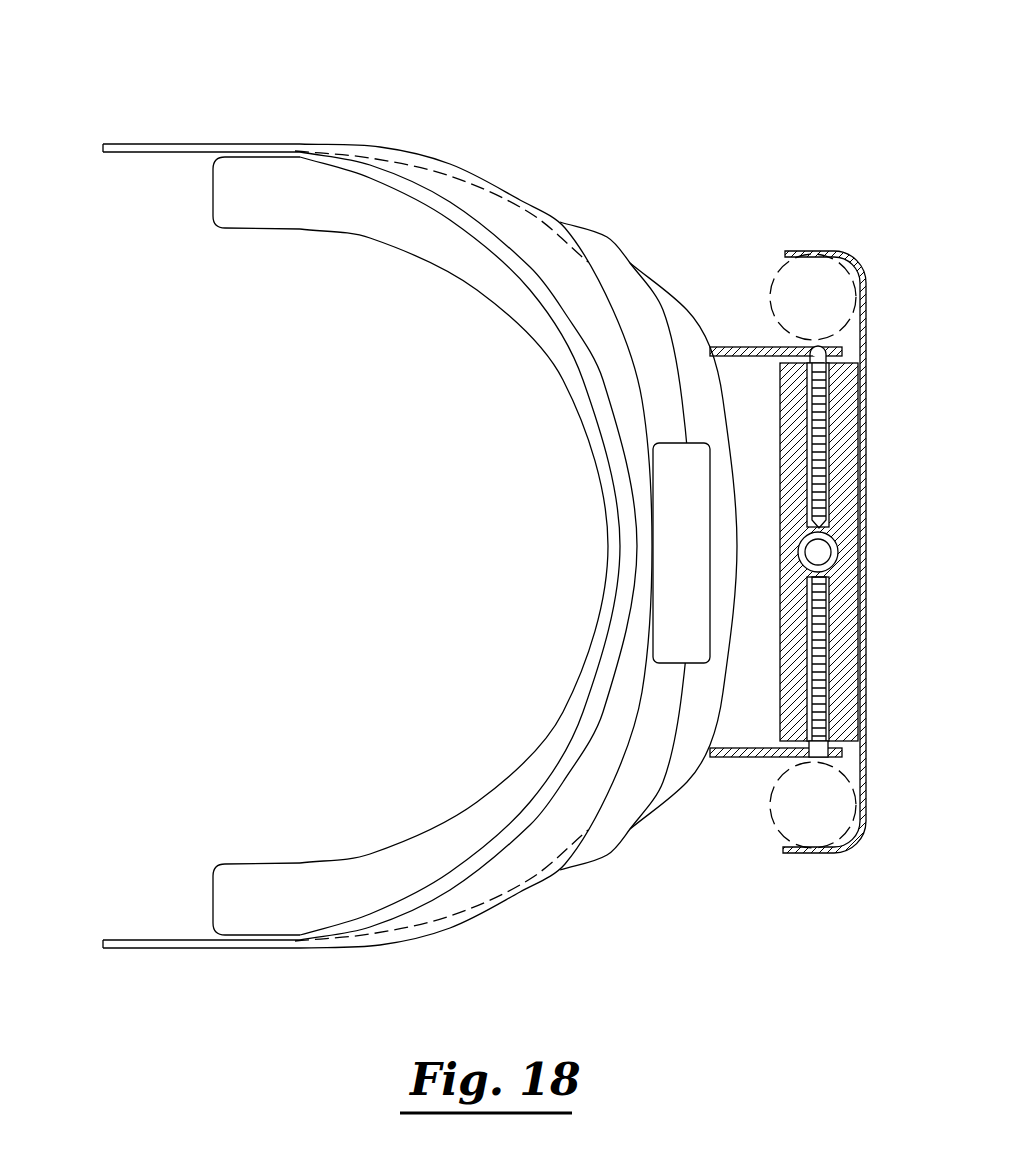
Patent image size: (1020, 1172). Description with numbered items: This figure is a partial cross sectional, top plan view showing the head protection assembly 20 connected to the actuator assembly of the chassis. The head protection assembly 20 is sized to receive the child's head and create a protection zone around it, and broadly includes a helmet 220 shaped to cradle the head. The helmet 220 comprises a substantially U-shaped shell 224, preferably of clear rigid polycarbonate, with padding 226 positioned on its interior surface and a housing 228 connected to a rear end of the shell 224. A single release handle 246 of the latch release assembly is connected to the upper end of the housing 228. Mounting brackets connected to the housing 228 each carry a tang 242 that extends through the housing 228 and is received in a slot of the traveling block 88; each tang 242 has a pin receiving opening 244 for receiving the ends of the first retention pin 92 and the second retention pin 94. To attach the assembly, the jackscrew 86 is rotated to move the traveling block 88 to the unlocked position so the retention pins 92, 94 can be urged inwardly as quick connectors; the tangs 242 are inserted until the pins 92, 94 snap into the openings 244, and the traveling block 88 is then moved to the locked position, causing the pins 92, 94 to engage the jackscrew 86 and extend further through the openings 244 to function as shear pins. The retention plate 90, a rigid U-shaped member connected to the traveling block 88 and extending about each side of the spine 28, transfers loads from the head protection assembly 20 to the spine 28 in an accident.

The head protection assembly 20 is at (350, 543).
The helmet 220 is at (293, 143).
The shell 224 is at (148, 948).
The padding 226 is at (280, 860).
The housing 228 is at (600, 238).
The tang 242 is at (743, 346).
The pin receiving opening 244 is at (812, 347).
The first retention pin 92 is at (843, 392).
The retention plate 90 is at (868, 446).
The jackscrew 86 is at (836, 541).
The traveling block 88 is at (778, 545).
The second retention pin 94 is at (848, 681).
The release handle 246 is at (672, 629).
The spine 28 is at (825, 604).